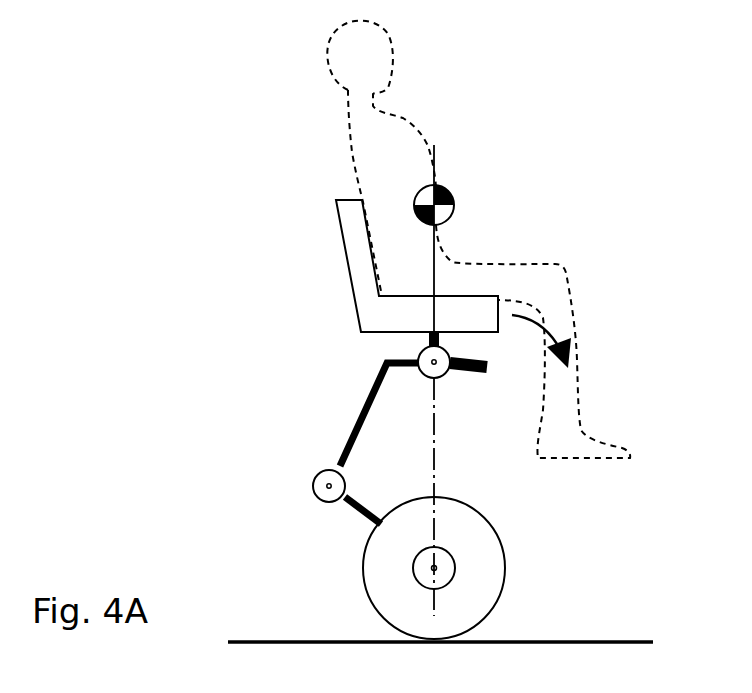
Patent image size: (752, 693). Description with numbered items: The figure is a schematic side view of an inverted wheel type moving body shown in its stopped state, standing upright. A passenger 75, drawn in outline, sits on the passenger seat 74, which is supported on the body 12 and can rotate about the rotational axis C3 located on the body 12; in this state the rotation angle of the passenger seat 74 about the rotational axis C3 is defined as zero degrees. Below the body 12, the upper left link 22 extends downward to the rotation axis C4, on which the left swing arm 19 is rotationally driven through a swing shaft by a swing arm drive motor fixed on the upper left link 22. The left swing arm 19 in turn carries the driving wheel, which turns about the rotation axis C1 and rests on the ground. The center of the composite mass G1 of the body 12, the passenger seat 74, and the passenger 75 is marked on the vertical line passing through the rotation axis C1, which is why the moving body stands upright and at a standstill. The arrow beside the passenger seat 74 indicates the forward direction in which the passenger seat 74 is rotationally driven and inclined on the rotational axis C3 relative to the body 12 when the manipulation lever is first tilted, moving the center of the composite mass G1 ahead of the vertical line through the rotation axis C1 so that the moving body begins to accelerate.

The passenger 75 is at (357, 150).
The center of composite mass G1 is at (456, 197).
The passenger seat 74 is at (352, 240).
The rotational axis C3 is at (428, 358).
The body 12 is at (458, 373).
The upper left link 22 is at (355, 428).
The rotation axis C4 is at (313, 480).
The left swing arm 19 is at (357, 512).
The rotation axis C1 is at (425, 568).